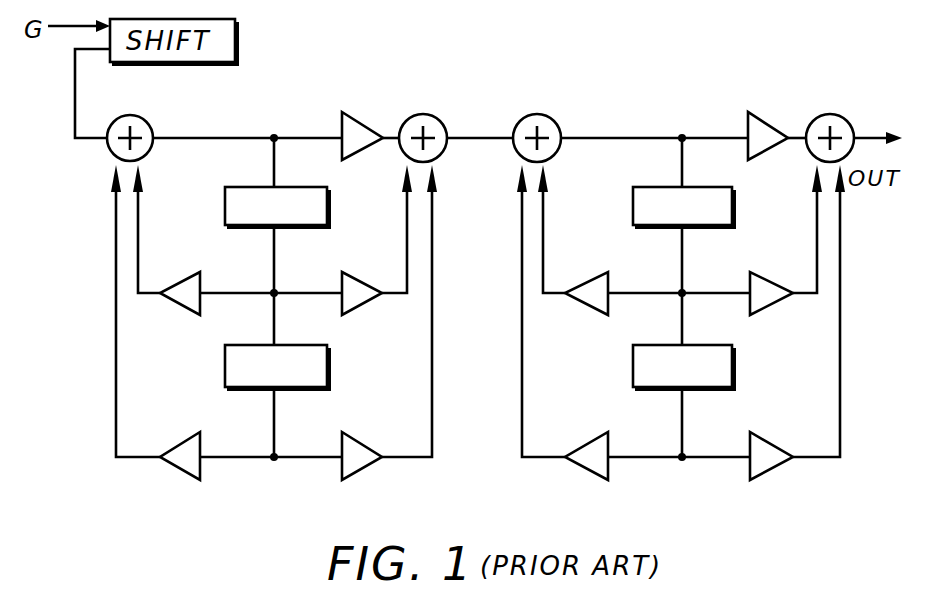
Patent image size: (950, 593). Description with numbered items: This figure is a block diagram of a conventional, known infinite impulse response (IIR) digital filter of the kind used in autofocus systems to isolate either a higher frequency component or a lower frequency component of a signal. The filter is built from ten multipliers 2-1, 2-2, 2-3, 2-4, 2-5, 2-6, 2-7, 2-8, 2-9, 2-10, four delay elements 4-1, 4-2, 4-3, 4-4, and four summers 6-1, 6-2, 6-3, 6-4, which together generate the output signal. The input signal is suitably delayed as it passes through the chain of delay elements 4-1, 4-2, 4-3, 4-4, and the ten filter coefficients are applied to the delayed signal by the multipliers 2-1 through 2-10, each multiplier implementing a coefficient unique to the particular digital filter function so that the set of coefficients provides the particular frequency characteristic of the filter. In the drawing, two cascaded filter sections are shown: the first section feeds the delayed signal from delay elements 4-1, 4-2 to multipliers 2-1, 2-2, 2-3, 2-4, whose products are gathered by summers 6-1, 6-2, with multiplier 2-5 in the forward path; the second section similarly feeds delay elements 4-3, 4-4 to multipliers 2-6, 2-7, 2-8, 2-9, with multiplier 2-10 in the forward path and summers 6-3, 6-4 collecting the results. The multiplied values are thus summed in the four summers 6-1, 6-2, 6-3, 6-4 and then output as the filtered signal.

The summer 6-1 is at (135, 116).
The summer 6-2 is at (430, 115).
The summer 6-3 is at (543, 115).
The summer 6-4 is at (836, 116).
The multiplier 2-1 is at (190, 315).
The multiplier 2-2 is at (190, 480).
The multiplier 2-3 is at (355, 315).
The multiplier 2-4 is at (358, 480).
The multiplier 2-5 is at (355, 113).
The multiplier 2-6 is at (600, 315).
The multiplier 2-7 is at (590, 480).
The multiplier 2-8 is at (763, 315).
The multiplier 2-9 is at (770, 480).
The multiplier 2-10 is at (752, 118).
The delay element 4-1 is at (331, 222).
The delay element 4-2 is at (329, 367).
The delay element 4-3 is at (736, 222).
The delay element 4-4 is at (734, 367).